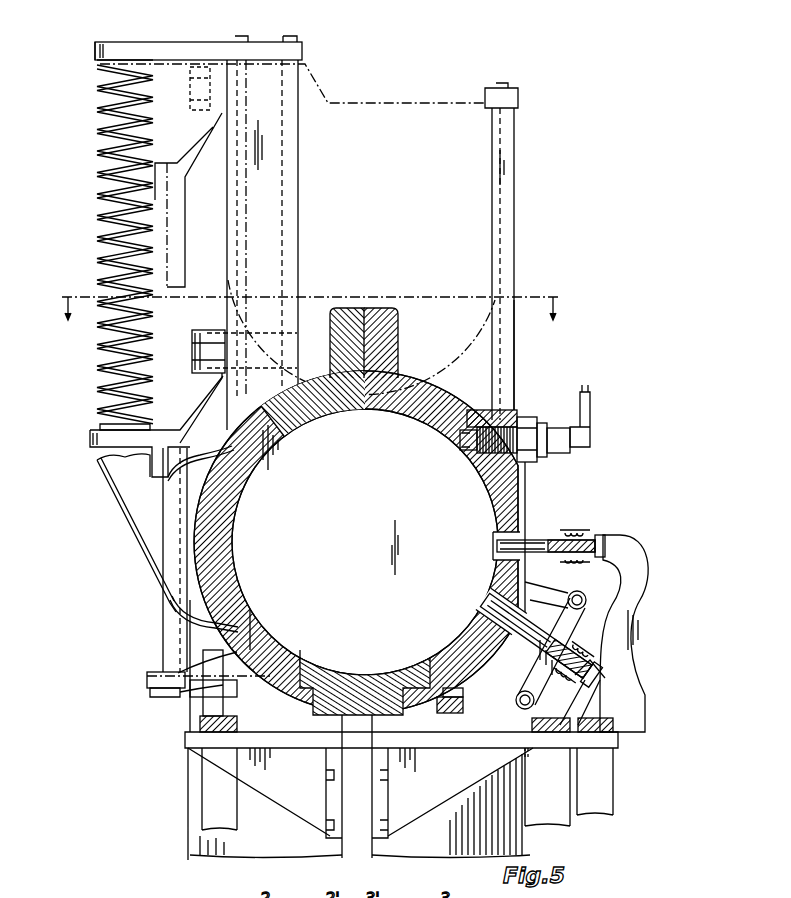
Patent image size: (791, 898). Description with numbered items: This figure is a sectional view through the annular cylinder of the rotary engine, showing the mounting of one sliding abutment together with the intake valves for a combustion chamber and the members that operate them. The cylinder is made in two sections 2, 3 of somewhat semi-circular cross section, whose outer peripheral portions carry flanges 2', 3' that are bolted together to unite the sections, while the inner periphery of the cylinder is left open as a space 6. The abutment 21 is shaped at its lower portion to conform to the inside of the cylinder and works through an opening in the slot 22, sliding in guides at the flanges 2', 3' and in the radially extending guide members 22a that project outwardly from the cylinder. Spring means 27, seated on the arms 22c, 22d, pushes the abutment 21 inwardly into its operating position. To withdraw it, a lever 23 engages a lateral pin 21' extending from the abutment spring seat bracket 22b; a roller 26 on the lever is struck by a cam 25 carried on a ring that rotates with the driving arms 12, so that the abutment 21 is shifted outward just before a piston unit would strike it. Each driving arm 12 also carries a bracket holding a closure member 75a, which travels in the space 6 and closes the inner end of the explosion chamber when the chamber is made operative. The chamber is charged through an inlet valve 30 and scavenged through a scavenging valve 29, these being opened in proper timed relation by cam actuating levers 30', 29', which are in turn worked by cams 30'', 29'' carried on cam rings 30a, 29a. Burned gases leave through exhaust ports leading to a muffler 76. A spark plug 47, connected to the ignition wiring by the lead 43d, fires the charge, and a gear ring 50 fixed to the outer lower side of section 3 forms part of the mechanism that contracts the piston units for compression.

The space 6 is at (310, 299).
The arm 22d is at (128, 40).
The spring means 27 is at (100, 168).
The radially extending guide members 22a is at (525, 226).
The slot 22 is at (516, 362).
The abutment 21 is at (363, 379).
The cylinder section 2 is at (359, 542).
The cylinder section 3 is at (342, 394).
The flange 2' is at (347, 330).
The flange 3' is at (381, 330).
The spark plug 47 is at (553, 420).
The lead 43d is at (592, 412).
The arm 22c is at (90, 437).
The muffler 76 is at (136, 533).
The abutment spring seat bracket 22b is at (163, 632).
The lateral pin 21' is at (189, 672).
The lever 23 is at (155, 697).
The roller 26 is at (205, 705).
The closure member 75a is at (370, 685).
The driving arm 12 is at (345, 787).
The cam 25 is at (205, 786).
The inlet valve 30 is at (530, 545).
The cam actuating lever 30' is at (624, 633).
The scavenging valve 29 is at (521, 639).
The cam actuating lever 29' is at (564, 653).
The cam 29'' is at (529, 738).
The cam 30'' is at (619, 725).
The gear ring 50 is at (466, 698).
The cam ring 29a is at (553, 826).
The cam ring 30a is at (600, 815).